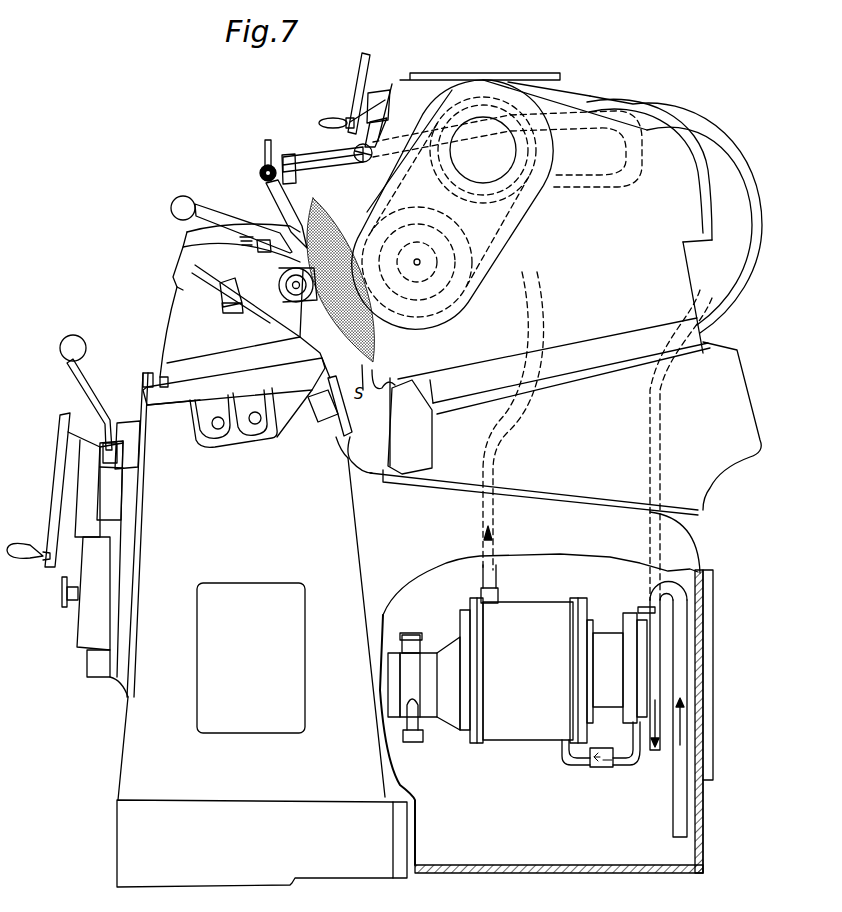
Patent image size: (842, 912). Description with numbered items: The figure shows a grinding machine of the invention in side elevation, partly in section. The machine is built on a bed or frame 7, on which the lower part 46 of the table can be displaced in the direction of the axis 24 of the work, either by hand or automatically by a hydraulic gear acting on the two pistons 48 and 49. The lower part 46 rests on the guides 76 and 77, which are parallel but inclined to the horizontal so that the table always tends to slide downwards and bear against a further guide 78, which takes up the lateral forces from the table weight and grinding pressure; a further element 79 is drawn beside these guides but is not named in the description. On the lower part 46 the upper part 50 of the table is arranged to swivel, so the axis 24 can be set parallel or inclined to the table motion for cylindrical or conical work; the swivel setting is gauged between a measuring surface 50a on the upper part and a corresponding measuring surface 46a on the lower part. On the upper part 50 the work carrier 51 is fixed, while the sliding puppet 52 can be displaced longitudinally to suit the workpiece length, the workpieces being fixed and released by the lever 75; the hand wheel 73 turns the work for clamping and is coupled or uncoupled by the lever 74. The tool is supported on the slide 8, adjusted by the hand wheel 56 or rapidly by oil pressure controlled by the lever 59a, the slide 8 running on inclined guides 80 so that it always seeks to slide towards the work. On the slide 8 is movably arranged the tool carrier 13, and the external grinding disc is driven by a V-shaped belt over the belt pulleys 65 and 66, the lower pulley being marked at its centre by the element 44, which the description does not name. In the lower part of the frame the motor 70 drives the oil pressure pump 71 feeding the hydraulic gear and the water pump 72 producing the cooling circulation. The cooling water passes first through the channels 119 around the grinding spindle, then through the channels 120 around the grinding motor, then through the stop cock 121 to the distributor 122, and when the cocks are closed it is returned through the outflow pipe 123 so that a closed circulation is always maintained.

The bed or frame 7 is at (128, 750).
The slide 8 is at (696, 334).
The tool carrier 13 is at (687, 137).
The axis of the work 24 is at (281, 283).
The pulley shaft 44 is at (419, 262).
The lower part of the table 46 is at (148, 398).
The measuring surface 46a is at (145, 365).
The piston 48 is at (218, 430).
The piston 49 is at (255, 425).
The upper part of the table 50 is at (173, 331).
The measuring surface 50a is at (163, 374).
The work carrier 51 is at (341, 280).
The sliding puppet 52 is at (188, 258).
The hand wheel 56 is at (58, 498).
The lever 59a is at (70, 340).
The belt pulley 65 is at (516, 222).
The belt pulley 66 is at (450, 300).
The motor 70 is at (523, 740).
The oil pressure pump 71 is at (398, 683).
The water pump 72 is at (628, 623).
The hand wheel 73 is at (362, 73).
The lever 74 is at (353, 118).
The lever 75 is at (170, 208).
The guide 76 is at (165, 404).
The guide 77 is at (289, 401).
The guide 78 is at (312, 399).
The bracket 79 is at (312, 390).
The guides 80 is at (720, 343).
The channels 119 is at (417, 280).
The channels 120 is at (507, 82).
The stop cock 121 is at (260, 170).
The distributor 122 is at (305, 247).
The outflow pipe 123 is at (745, 170).